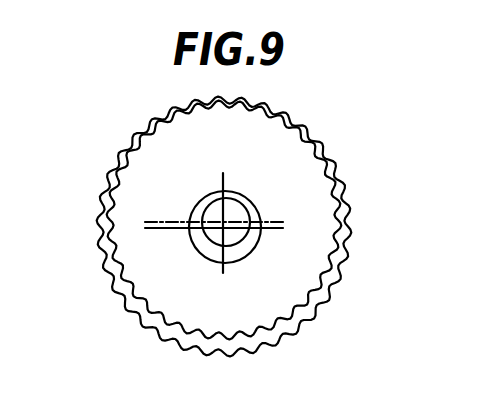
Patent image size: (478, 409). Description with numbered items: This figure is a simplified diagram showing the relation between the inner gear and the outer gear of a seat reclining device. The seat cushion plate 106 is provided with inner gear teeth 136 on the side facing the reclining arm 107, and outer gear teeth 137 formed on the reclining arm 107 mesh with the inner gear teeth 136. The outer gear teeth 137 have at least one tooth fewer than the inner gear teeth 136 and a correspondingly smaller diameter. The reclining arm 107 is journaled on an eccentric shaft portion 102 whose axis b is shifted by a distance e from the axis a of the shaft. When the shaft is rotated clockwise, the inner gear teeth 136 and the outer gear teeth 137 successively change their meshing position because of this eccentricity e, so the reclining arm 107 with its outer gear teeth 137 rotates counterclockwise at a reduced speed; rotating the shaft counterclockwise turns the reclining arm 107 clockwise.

The eccentric shaft portion 102 is at (233, 213).
The seat cushion plate 106 is at (125, 317).
The reclining arm 107 is at (263, 250).
The inner gear teeth 136 is at (256, 340).
The outer gear teeth 137 is at (310, 265).
The axis of the shaft a is at (217, 229).
The axis of the eccentric shaft portion b is at (216, 213).
The eccentricity distance e is at (165, 252).